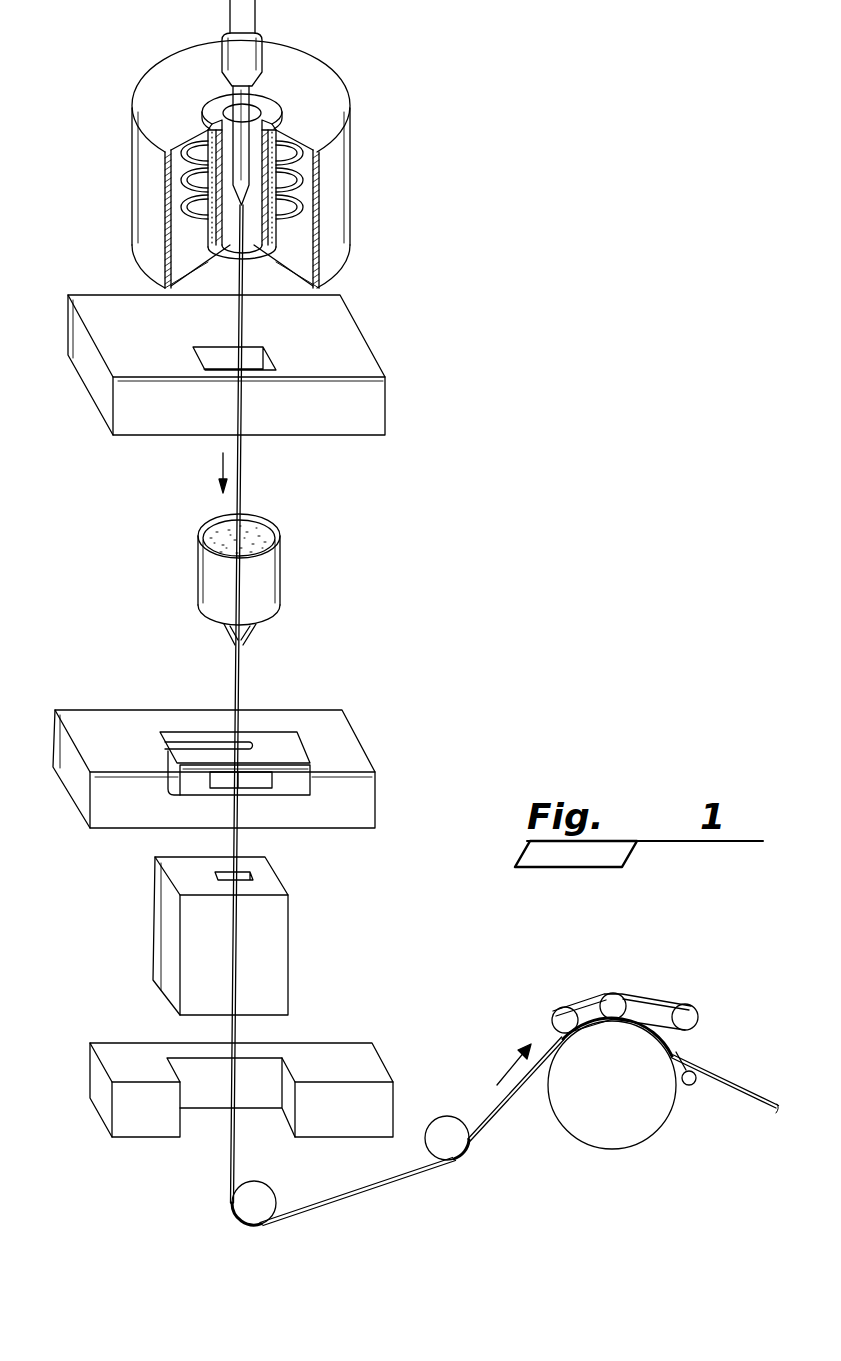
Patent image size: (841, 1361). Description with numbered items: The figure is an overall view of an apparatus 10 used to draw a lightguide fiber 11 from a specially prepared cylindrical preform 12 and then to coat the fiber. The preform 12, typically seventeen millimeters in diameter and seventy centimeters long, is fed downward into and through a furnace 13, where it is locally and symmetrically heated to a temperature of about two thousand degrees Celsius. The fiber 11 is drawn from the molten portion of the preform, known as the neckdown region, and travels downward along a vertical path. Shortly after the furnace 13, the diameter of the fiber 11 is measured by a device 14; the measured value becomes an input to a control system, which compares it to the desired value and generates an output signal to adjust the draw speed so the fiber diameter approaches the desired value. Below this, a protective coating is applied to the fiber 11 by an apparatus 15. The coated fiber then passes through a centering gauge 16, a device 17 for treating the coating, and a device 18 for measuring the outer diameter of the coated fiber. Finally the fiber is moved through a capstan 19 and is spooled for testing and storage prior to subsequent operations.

The apparatus 10 is at (398, 232).
The lightguide fiber 11 is at (243, 460).
The cylindrical preform 12 is at (247, 97).
The furnace 13 is at (352, 147).
The device 14 is at (362, 328).
The apparatus 15 is at (280, 565).
The centering gauge 16 is at (302, 710).
The device for treating the coating 17 is at (290, 927).
The device for measuring the outer diameter of the coated fiber 18 is at (328, 1043).
The capstan 19 is at (653, 998).